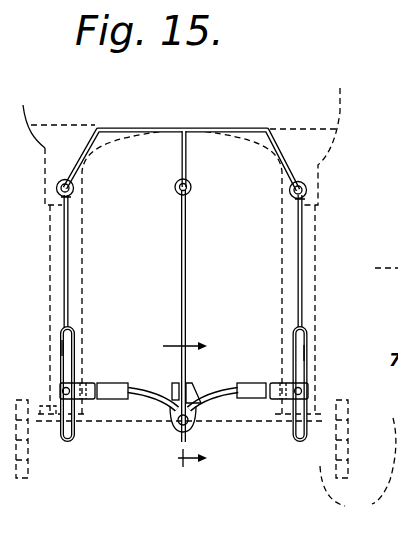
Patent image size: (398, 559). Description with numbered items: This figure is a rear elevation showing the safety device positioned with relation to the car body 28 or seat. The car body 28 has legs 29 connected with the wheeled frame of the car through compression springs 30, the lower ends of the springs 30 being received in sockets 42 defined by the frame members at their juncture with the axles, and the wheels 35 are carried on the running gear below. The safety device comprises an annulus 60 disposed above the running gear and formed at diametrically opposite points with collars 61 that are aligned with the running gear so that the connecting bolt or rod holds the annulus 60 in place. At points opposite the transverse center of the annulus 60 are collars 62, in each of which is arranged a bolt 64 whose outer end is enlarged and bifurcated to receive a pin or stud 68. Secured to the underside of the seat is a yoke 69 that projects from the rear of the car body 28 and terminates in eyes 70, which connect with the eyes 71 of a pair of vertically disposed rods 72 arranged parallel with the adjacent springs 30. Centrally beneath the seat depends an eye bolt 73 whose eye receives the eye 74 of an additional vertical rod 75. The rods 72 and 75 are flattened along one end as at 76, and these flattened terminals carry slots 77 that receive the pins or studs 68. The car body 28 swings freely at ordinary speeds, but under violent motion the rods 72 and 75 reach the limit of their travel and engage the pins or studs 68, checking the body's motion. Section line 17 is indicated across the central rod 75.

The section line 17 is at (176, 403).
The car body 28 is at (318, 107).
The legs 29 is at (305, 165).
The compression springs 30 is at (305, 268).
The wheels 35 is at (358, 468).
The sockets 42 is at (53, 412).
The annulus 60 is at (204, 396).
The collars 61 is at (193, 428).
The collars 62 is at (118, 385).
The bolt 64 is at (228, 394).
The pin or stud 68 is at (78, 384).
The yoke 69 is at (240, 129).
The eyes 70 is at (74, 188).
The eyes 71 is at (69, 200).
The rods 72 is at (69, 272).
The eye bolt 73 is at (187, 158).
The eye 74 is at (191, 190).
The rod 75 is at (187, 252).
The flattened portion 76 is at (73, 344).
The slots 77 is at (63, 347).